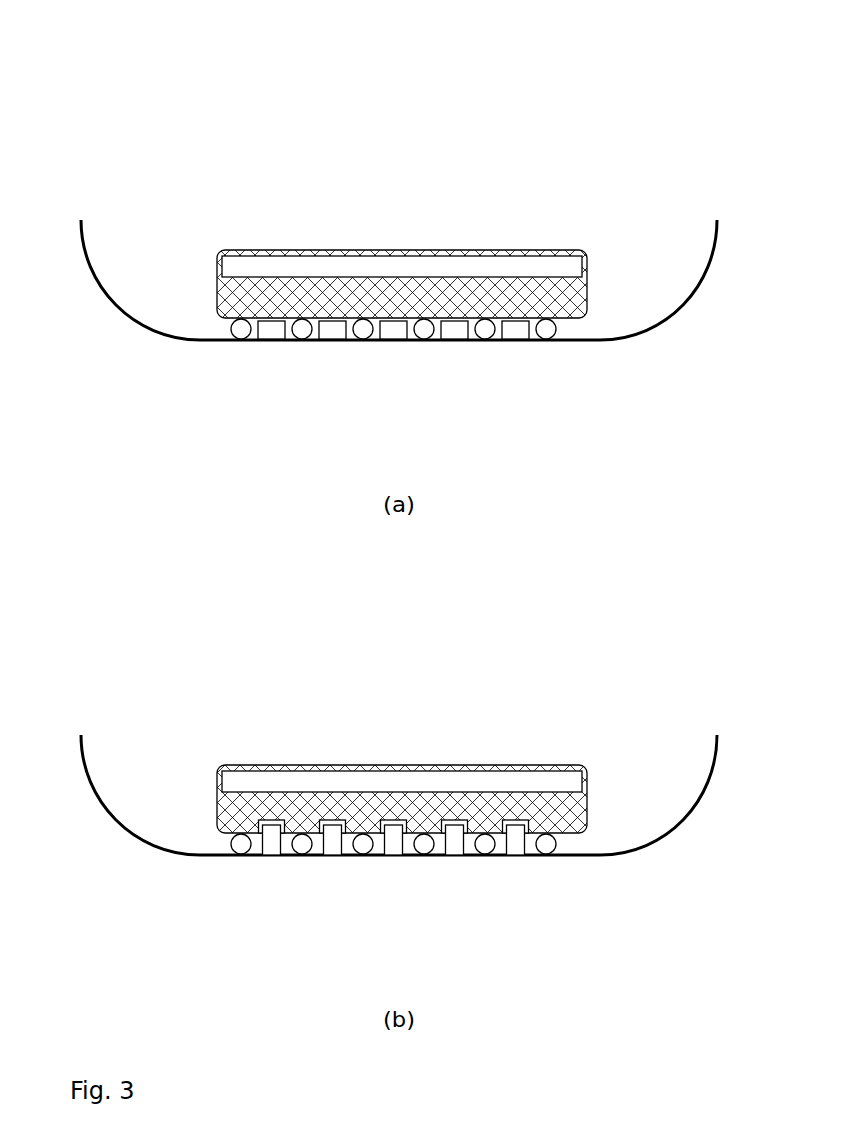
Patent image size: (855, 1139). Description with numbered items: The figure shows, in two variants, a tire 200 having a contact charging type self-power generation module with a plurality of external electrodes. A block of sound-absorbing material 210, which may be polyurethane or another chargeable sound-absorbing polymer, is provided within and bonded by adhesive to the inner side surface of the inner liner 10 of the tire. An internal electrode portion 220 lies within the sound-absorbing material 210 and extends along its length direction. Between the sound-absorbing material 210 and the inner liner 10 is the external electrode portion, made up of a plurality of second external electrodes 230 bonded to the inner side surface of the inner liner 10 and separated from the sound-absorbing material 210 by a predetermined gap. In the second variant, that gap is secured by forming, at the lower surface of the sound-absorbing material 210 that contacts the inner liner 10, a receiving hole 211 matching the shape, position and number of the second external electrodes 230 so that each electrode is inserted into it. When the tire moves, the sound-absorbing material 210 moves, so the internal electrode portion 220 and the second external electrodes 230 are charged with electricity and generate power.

The inner liner 10 is at (697, 290).
The tire 200 is at (647, 95).
The sound-absorbing material 210 is at (537, 300).
The receiving hole 211 is at (238, 820).
The internal electrode portion 220 is at (443, 268).
The second external electrodes 230 is at (502, 335).